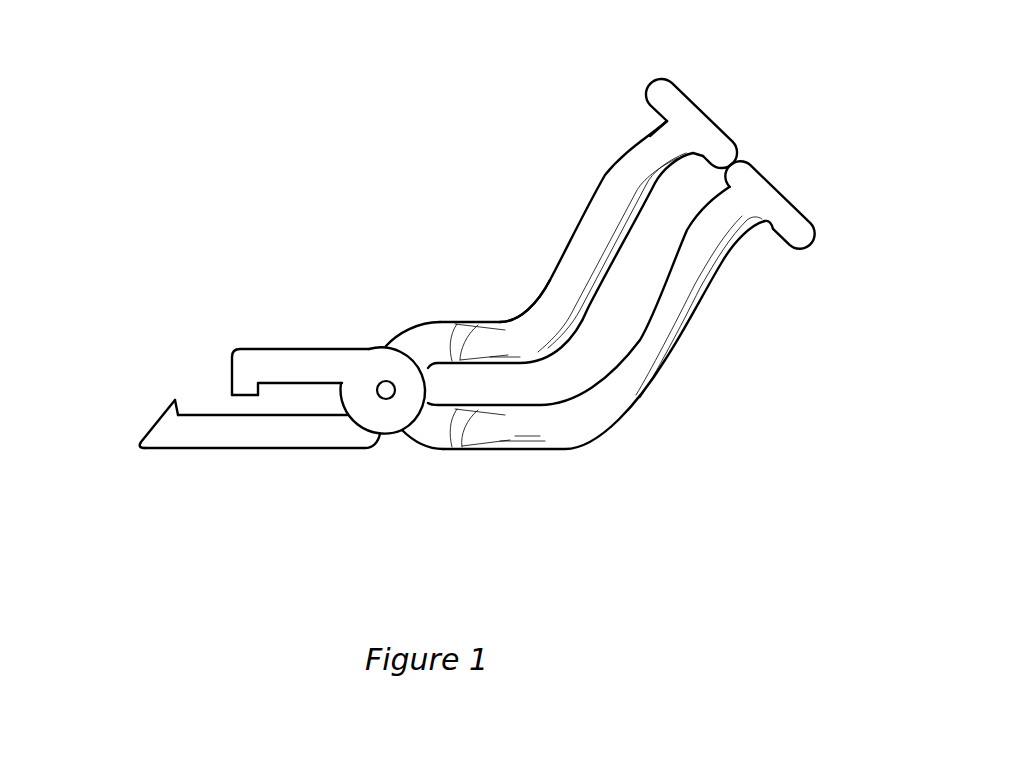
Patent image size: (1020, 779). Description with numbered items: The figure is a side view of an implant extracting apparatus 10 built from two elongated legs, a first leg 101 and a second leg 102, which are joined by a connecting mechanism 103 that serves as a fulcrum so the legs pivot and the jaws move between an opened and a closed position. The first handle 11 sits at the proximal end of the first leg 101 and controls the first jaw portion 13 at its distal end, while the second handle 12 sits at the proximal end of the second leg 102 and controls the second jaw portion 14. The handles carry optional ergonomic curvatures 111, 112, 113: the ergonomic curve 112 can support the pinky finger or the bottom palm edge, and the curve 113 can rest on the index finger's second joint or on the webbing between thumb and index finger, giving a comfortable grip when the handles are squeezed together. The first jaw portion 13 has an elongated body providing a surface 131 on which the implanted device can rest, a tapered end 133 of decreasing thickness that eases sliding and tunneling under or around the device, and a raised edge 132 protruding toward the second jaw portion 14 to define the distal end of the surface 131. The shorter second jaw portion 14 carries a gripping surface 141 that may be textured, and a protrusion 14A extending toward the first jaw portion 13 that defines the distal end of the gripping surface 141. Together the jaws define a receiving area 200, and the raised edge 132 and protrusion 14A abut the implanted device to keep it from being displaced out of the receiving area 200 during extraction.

The implant extracting apparatus 10 is at (742, 420).
The first handle 11 is at (597, 203).
The second handle 12 is at (690, 277).
The first jaw portion 13 is at (215, 449).
The second jaw portion 14 is at (254, 348).
The protrusion 14A is at (243, 397).
The first leg 101 is at (663, 80).
The second leg 102 is at (778, 188).
The connecting mechanism 103 is at (386, 399).
The curvature 111 is at (438, 320).
The ergonomic curve 112 is at (527, 310).
The curve 113 is at (662, 120).
The surface 131 is at (221, 414).
The raised edge 132 is at (177, 397).
The tapered end 133 is at (155, 422).
The gripping surface 141 is at (260, 388).
The receiving area 200 is at (198, 397).